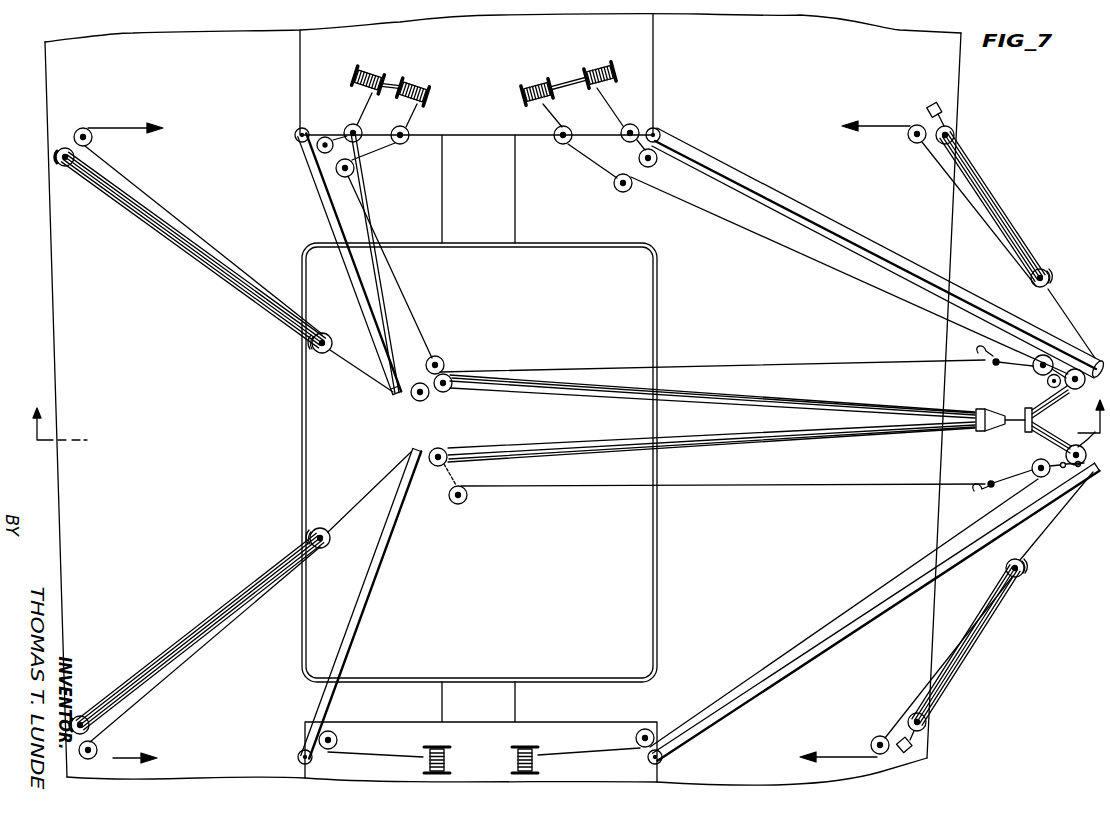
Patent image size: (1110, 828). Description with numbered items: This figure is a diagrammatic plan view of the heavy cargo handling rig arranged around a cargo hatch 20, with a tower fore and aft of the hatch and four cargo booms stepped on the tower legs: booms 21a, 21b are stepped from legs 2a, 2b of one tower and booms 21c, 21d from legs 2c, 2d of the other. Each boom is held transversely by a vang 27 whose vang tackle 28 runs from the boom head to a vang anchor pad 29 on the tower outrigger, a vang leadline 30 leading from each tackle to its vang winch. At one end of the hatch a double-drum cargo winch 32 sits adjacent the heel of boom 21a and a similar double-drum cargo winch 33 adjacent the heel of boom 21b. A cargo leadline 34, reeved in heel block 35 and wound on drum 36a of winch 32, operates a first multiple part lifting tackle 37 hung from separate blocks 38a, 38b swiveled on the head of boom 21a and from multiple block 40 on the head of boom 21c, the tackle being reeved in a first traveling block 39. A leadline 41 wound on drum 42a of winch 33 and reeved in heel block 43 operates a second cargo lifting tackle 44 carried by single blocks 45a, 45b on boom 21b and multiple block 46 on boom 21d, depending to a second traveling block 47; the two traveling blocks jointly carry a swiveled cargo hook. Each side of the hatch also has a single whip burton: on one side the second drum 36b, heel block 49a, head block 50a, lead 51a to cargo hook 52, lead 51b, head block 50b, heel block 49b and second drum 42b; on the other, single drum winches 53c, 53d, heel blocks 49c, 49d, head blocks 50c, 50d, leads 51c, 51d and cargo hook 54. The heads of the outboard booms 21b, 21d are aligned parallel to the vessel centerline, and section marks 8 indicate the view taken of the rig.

The leg 2a is at (294, 130).
The leg 2b is at (661, 132).
The leg 2c is at (297, 756).
The leg 2d is at (664, 758).
The section line 8- 8 is at (569, 409).
The cargo hatch 20 is at (488, 613).
The cargo boom 21a is at (316, 176).
The cargo boom 21b is at (775, 195).
The cargo boom 21c is at (367, 598).
The cargo boom 21d is at (880, 610).
The vang 27 is at (126, 216).
The vang tackle 28 is at (117, 188).
The vang anchor pad 29 is at (56, 160).
The vang leadline 30 is at (108, 128).
The double-drum cargo winch 32 is at (395, 76).
The double-drum cargo winch 33 is at (558, 77).
The cargo leadline 34 is at (390, 336).
The heel block 35 is at (330, 137).
The drum 36a is at (360, 66).
The second drum 36b is at (430, 94).
The first multiple part lifting tackle 37 is at (685, 410).
The block 38a is at (424, 402).
The block 38b is at (458, 391).
The first traveling block 39 is at (1000, 406).
The multiple block 40 is at (447, 450).
The leadline 41 is at (818, 234).
The drum 42a is at (616, 67).
The second drum 42b is at (525, 84).
The heel block 43 is at (653, 166).
The second cargo lifting tackle 44 is at (1057, 395).
The single block 45a is at (1077, 369).
The single block 45b is at (1076, 432).
The multiple block 46 is at (1086, 455).
The second traveling block 47 is at (1030, 406).
The heel block 49a is at (355, 172).
The heel block 49b is at (613, 186).
The heel block 49c is at (340, 741).
The heel block 49d is at (656, 729).
The head block 50a is at (446, 362).
The head block 50b is at (1044, 354).
The head block 50c is at (462, 504).
The head block 50d is at (1047, 477).
The lead 51a is at (615, 374).
The lead 51b is at (852, 275).
The lead 51c is at (598, 484).
The lead 51d is at (925, 557).
The cargo hook 52 is at (975, 352).
The single drum winch 53c is at (441, 748).
The single drum winch 53d is at (527, 748).
The cargo hook 54 is at (982, 488).